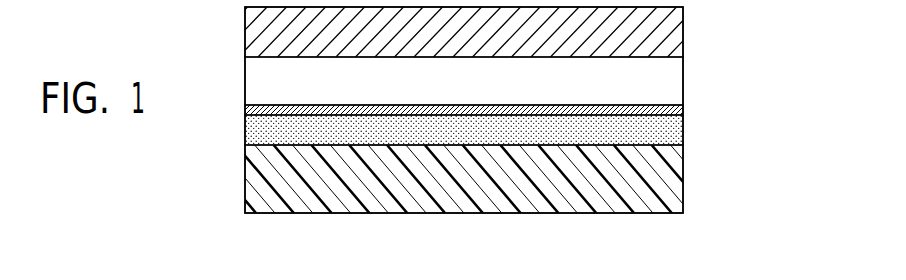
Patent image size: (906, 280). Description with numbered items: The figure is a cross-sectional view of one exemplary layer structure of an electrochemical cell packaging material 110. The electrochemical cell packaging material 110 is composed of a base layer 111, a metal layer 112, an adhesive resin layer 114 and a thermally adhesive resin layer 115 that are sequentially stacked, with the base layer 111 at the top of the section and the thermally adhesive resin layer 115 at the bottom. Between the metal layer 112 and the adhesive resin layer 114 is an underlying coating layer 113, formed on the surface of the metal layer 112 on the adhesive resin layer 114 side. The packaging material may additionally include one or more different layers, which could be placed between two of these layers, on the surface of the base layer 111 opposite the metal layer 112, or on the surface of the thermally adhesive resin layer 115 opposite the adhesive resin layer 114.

The electrochemical cell packaging material 110 is at (408, 213).
The base layer 111 is at (668, 15).
The metal layer 112 is at (660, 78).
The underlying coating layer 113 is at (683, 108).
The adhesive resin layer 114 is at (683, 137).
The thermally adhesive resin layer 115 is at (660, 177).